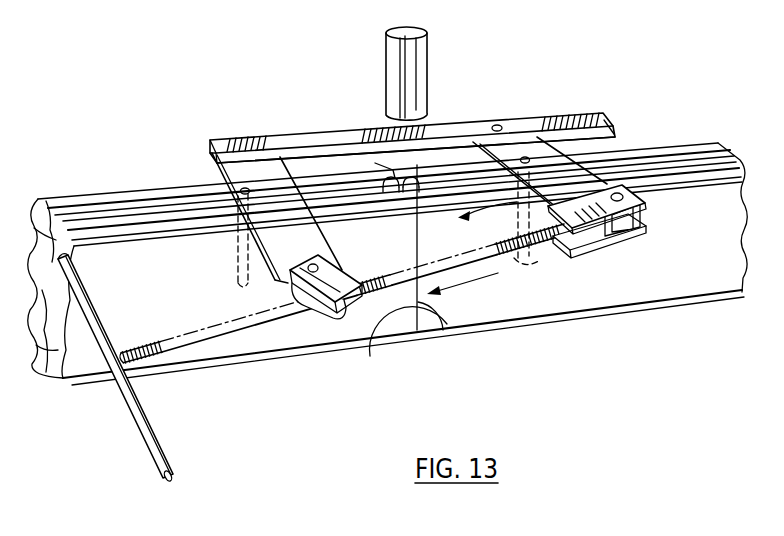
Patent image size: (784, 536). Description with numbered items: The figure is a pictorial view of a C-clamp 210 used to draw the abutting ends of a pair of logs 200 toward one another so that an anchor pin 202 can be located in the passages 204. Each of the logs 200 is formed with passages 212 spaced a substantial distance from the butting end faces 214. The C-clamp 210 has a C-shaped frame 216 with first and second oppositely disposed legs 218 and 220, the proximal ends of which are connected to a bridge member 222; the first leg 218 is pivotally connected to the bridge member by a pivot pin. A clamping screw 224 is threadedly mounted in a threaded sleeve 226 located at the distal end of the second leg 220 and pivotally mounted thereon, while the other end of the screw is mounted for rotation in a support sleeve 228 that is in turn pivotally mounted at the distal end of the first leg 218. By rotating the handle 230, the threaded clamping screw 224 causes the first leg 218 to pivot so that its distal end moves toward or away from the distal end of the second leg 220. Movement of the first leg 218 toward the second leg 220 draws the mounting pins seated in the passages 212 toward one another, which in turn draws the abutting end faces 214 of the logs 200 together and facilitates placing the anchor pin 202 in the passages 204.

The logs 200 is at (262, 337).
The anchor pin 202 is at (392, 87).
The passages 204 is at (386, 188).
The C-clamp 210 is at (273, 138).
The passages 212 is at (238, 270).
The butting end faces 214 is at (378, 335).
The C-shaped frame 216 is at (315, 140).
The first leg 218 is at (521, 147).
The second leg 220 is at (213, 173).
The bridge member 222 is at (457, 133).
The clamping screw 224 is at (497, 125).
The threaded sleeve 226 is at (327, 317).
The support sleeve 228 is at (587, 230).
The handle 230 is at (130, 412).